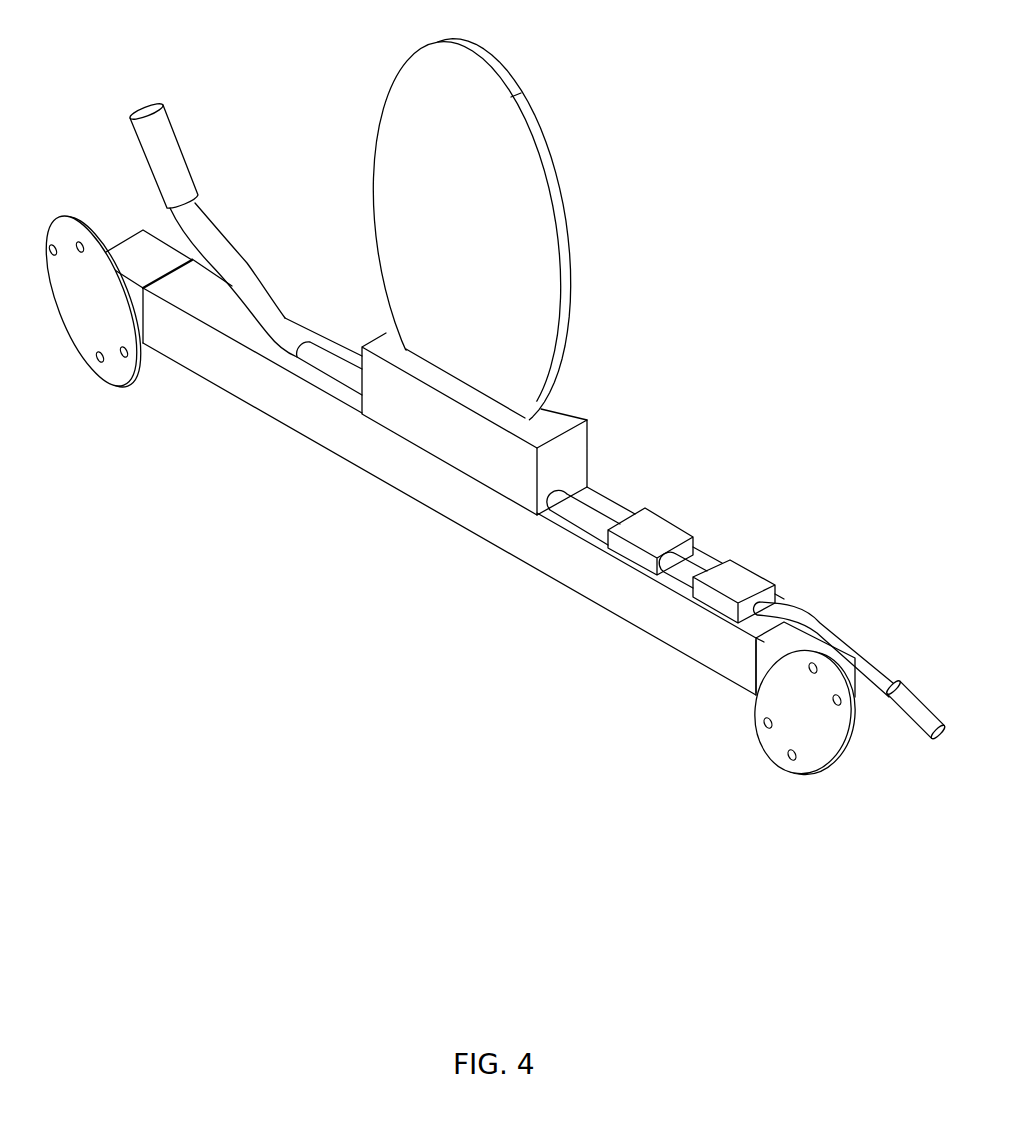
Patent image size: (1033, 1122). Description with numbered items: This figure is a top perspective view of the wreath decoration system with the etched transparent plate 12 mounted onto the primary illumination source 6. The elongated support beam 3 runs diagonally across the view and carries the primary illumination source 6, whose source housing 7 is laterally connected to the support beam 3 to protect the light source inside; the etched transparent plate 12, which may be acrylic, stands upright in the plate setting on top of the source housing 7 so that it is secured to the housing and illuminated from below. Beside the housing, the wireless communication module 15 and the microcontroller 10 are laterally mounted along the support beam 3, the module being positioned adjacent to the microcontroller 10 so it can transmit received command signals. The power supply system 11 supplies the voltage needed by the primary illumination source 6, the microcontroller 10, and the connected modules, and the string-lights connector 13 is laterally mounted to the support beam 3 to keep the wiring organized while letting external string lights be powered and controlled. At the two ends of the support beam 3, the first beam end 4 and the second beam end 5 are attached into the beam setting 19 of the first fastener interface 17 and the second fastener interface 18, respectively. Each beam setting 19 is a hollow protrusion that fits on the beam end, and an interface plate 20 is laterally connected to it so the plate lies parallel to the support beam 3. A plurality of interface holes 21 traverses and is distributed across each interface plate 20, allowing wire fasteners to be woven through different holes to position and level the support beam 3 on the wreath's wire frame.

The support beam 3 is at (415, 488).
The first beam end 4 is at (732, 682).
The second beam end 5 is at (150, 346).
The primary illumination source 6 is at (350, 327).
The source housing 7 is at (562, 418).
The microcontroller 10 is at (748, 578).
The power supply system 11 is at (910, 708).
The etched transparent plate 12 is at (430, 70).
The string-lights connector 13 is at (170, 143).
The wireless communication module 15 is at (658, 523).
The first fastener interface 17 is at (750, 800).
The second fastener interface 18 is at (102, 415).
The beam setting 19 is at (130, 243).
The interface plate 20 is at (82, 327).
The interface holes 21 is at (60, 257).